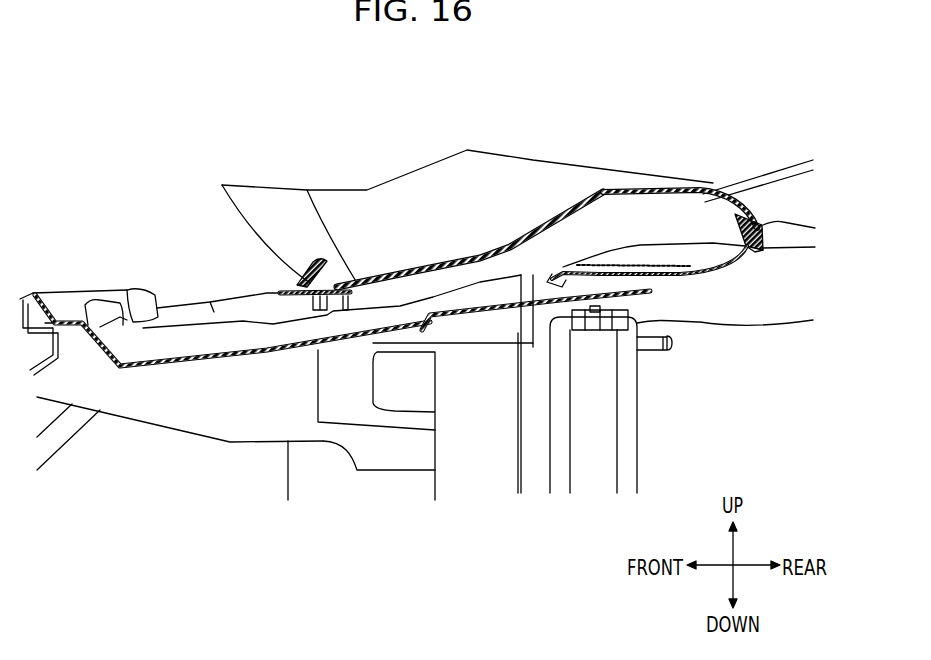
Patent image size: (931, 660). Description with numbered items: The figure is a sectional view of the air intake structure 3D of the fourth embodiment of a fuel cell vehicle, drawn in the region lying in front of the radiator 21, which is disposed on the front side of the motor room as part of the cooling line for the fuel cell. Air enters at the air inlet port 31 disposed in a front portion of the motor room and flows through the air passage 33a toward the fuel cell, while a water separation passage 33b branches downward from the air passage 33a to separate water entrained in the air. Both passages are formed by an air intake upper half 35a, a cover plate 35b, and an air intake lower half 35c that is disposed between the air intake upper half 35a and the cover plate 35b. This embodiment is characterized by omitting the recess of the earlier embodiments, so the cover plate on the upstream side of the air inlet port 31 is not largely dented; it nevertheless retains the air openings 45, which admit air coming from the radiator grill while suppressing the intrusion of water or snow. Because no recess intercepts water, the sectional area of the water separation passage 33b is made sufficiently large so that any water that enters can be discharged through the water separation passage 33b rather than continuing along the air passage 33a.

The air intake structure 3D is at (598, 146).
The radiator 21 is at (637, 442).
The air inlet port 31 is at (267, 294).
The air passage 33a is at (640, 218).
The water separation passage 33b is at (563, 285).
The air intake upper half 35a is at (738, 210).
The cover plate 35b is at (488, 318).
The air intake lower half 35c is at (733, 260).
The air openings 45 is at (107, 370).